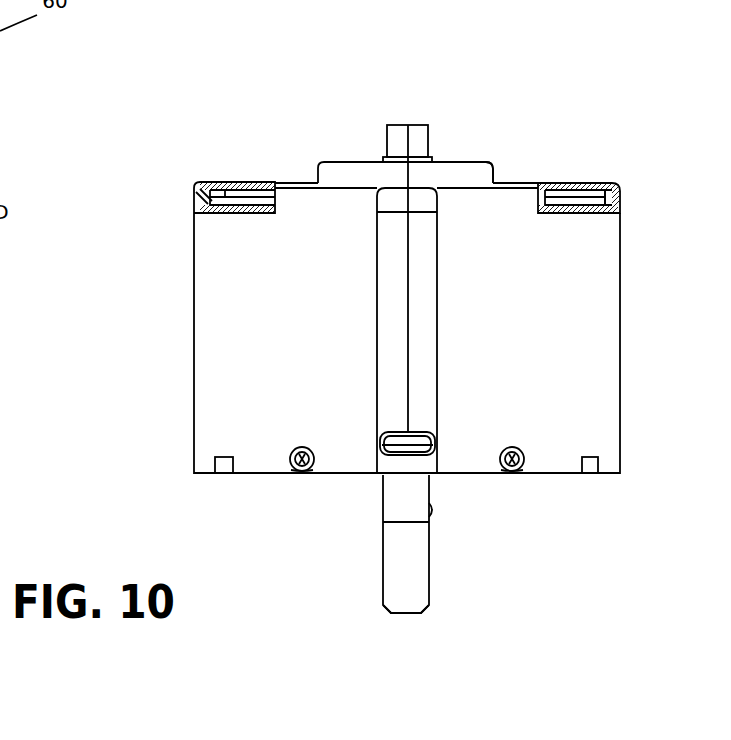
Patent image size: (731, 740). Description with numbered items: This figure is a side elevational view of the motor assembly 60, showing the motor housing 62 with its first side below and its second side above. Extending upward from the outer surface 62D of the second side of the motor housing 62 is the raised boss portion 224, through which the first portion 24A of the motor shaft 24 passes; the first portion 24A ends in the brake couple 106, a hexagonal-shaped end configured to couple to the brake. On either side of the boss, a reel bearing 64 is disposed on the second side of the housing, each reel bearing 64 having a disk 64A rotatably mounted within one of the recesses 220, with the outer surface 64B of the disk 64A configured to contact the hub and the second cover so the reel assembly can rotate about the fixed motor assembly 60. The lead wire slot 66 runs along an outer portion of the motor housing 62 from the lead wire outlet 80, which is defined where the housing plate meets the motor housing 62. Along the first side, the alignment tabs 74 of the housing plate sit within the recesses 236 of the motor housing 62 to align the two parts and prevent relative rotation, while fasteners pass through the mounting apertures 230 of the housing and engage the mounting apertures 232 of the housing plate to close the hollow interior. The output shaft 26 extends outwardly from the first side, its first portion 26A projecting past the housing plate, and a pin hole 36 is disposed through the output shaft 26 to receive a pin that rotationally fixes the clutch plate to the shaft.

The motor assembly 60 is at (436, 84).
The motor housing 62 is at (194, 302).
The outer surface of the second side of the motor housing 62D is at (305, 180).
The reel bearing 64 is at (208, 164).
The disk 64A is at (238, 188).
The outer surface of the disk 64B is at (615, 205).
The brake couple 106 is at (345, 165).
The motor shaft 24 is at (440, 138).
The first portion of the motor shaft 24A is at (385, 132).
The lead wire slot 66 is at (442, 228).
The raised boss portion 224 is at (497, 172).
The recesses 220 is at (196, 183).
The lead wire outlet 80 is at (400, 445).
The output shaft 26 is at (374, 568).
The first portion of the output shaft 26A is at (431, 586).
The pin hole 36 is at (432, 510).
The mounting apertures 230 is at (291, 467).
The mounting apertures 232 is at (298, 470).
The recesses 236 is at (218, 465).
The alignment tabs 74 is at (224, 474).